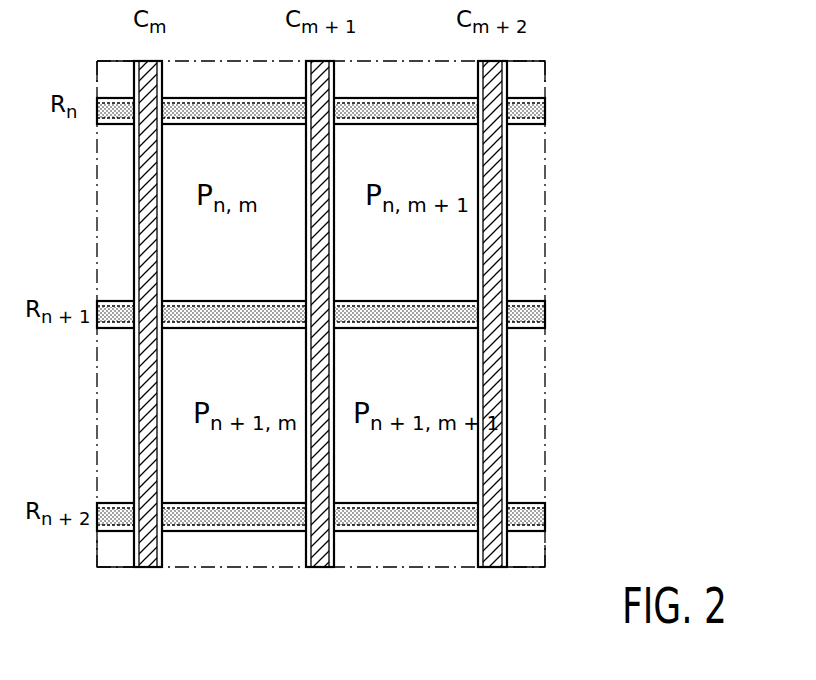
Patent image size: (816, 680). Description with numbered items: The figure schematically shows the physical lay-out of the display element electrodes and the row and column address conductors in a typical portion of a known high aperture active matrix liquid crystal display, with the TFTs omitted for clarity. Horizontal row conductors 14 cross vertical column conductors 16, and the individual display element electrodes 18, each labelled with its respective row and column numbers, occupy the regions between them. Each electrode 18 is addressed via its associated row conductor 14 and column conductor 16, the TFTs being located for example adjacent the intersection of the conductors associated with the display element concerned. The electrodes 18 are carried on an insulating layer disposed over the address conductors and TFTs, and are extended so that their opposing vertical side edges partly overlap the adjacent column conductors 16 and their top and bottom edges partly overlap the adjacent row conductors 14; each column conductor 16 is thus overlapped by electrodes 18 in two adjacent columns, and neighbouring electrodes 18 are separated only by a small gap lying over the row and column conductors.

The row conductors 14 is at (117, 127).
The column conductors 16 is at (163, 73).
The display element electrodes 18 is at (410, 98).